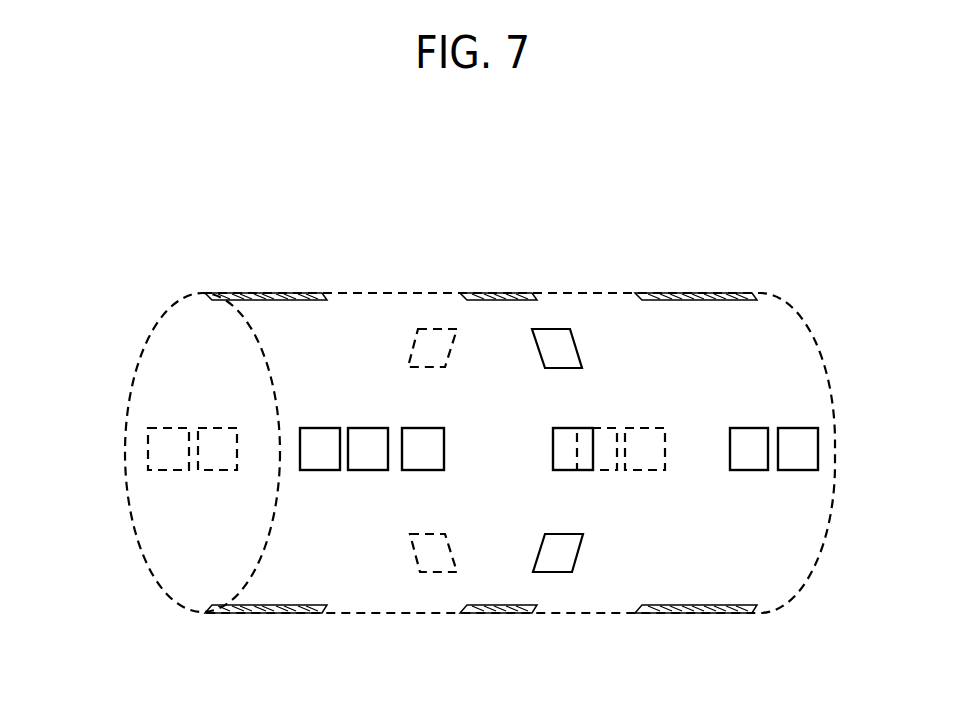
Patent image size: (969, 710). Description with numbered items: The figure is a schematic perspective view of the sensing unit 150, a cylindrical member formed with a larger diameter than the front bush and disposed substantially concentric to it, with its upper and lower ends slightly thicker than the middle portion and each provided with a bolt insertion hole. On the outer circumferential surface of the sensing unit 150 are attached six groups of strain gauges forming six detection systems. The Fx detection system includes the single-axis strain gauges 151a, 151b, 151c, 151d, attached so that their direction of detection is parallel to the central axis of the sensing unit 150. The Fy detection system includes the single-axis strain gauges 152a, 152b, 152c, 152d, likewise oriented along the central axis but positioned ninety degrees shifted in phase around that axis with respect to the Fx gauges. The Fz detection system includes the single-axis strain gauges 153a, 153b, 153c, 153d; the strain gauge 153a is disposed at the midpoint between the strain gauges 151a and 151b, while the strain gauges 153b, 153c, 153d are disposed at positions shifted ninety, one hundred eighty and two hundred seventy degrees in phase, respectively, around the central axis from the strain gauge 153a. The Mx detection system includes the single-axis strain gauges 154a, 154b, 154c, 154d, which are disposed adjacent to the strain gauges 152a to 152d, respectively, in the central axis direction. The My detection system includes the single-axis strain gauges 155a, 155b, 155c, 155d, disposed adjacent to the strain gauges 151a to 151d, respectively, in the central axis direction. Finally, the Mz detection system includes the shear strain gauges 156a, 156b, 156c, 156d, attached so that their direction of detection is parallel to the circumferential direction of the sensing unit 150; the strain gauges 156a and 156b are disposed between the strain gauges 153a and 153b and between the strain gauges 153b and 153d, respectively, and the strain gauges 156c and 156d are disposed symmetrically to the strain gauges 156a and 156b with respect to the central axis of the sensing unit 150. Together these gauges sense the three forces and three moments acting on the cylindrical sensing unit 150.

The sensing unit 150 is at (118, 348).
The strain gauge 151a is at (233, 292).
The strain gauge 151b is at (726, 292).
The strain gauge 151c is at (722, 613).
The strain gauge 151d is at (235, 613).
The strain gauge 155a is at (297, 292).
The strain gauge 155b is at (680, 292).
The strain gauge 155c is at (672, 613).
The strain gauge 155d is at (292, 613).
The strain gauge 153a is at (500, 292).
The strain gauge 153b is at (591, 428).
The strain gauge 153c is at (412, 428).
The strain gauge 153d is at (490, 613).
The strain gauge 156a is at (557, 329).
The strain gauge 156b is at (557, 572).
The strain gauge 156c is at (437, 329).
The strain gauge 156d is at (422, 572).
The strain gauge 152a is at (306, 440).
The strain gauge 152b is at (797, 437).
The strain gauge 152c is at (667, 436).
The strain gauge 152d is at (148, 463).
The strain gauge 154a is at (348, 470).
The strain gauge 154b is at (744, 470).
The strain gauge 154c is at (617, 428).
The strain gauge 154d is at (197, 470).